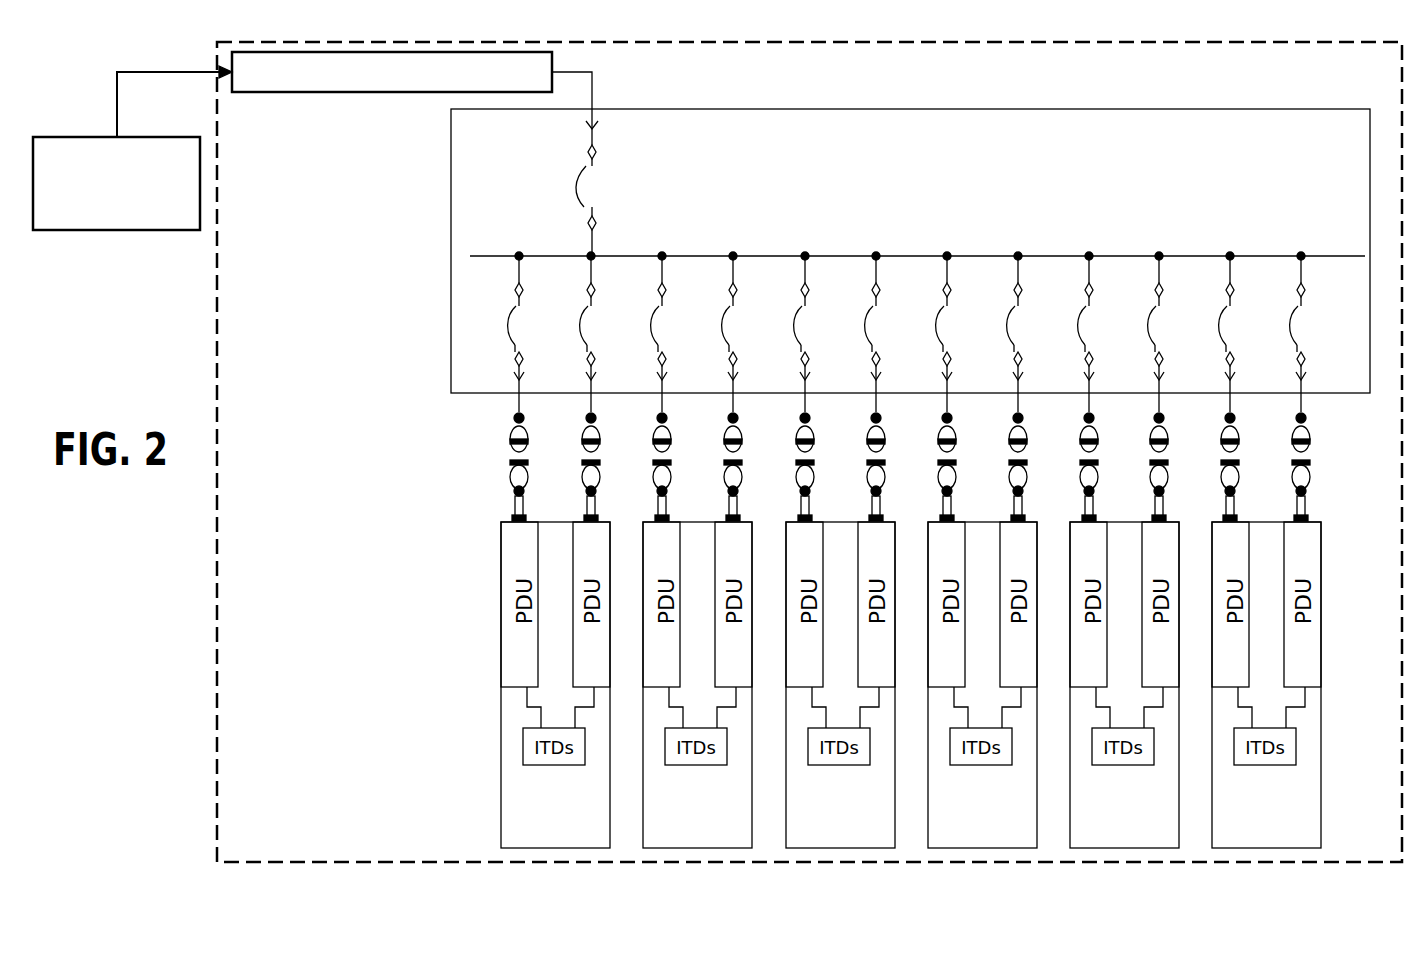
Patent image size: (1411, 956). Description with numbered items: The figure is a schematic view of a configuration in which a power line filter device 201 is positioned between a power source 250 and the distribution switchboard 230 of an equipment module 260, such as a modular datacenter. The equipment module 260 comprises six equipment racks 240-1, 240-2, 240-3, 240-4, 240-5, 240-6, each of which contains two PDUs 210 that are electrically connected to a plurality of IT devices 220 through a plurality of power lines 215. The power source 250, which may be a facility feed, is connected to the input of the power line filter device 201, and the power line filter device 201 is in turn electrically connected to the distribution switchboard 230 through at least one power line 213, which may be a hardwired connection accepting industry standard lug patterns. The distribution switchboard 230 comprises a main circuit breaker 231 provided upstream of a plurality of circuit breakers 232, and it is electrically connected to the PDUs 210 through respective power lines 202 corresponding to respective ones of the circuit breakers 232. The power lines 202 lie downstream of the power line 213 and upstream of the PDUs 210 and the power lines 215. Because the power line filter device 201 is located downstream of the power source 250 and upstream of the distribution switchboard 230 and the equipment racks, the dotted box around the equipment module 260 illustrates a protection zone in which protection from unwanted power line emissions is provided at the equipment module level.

The power line filter device 201 is at (270, 92).
The power lines 202 is at (500, 408).
The PDUs 210 is at (472, 527).
The power line 213 is at (595, 92).
The power lines 215 is at (1323, 688).
The IT devices 220 is at (500, 728).
The distribution switchboard 230 is at (450, 193).
The main circuit breaker 231 is at (600, 187).
The circuit breakers 232 is at (503, 363).
The equipment rack 240-1 is at (525, 810).
The equipment rack 240-2 is at (667, 810).
The equipment rack 240-3 is at (810, 810).
The equipment rack 240-4 is at (952, 810).
The equipment rack 240-5 is at (1094, 810).
The equipment rack 240-6 is at (1236, 810).
The power source 250 is at (83, 230).
The equipment module 260 is at (1387, 77).